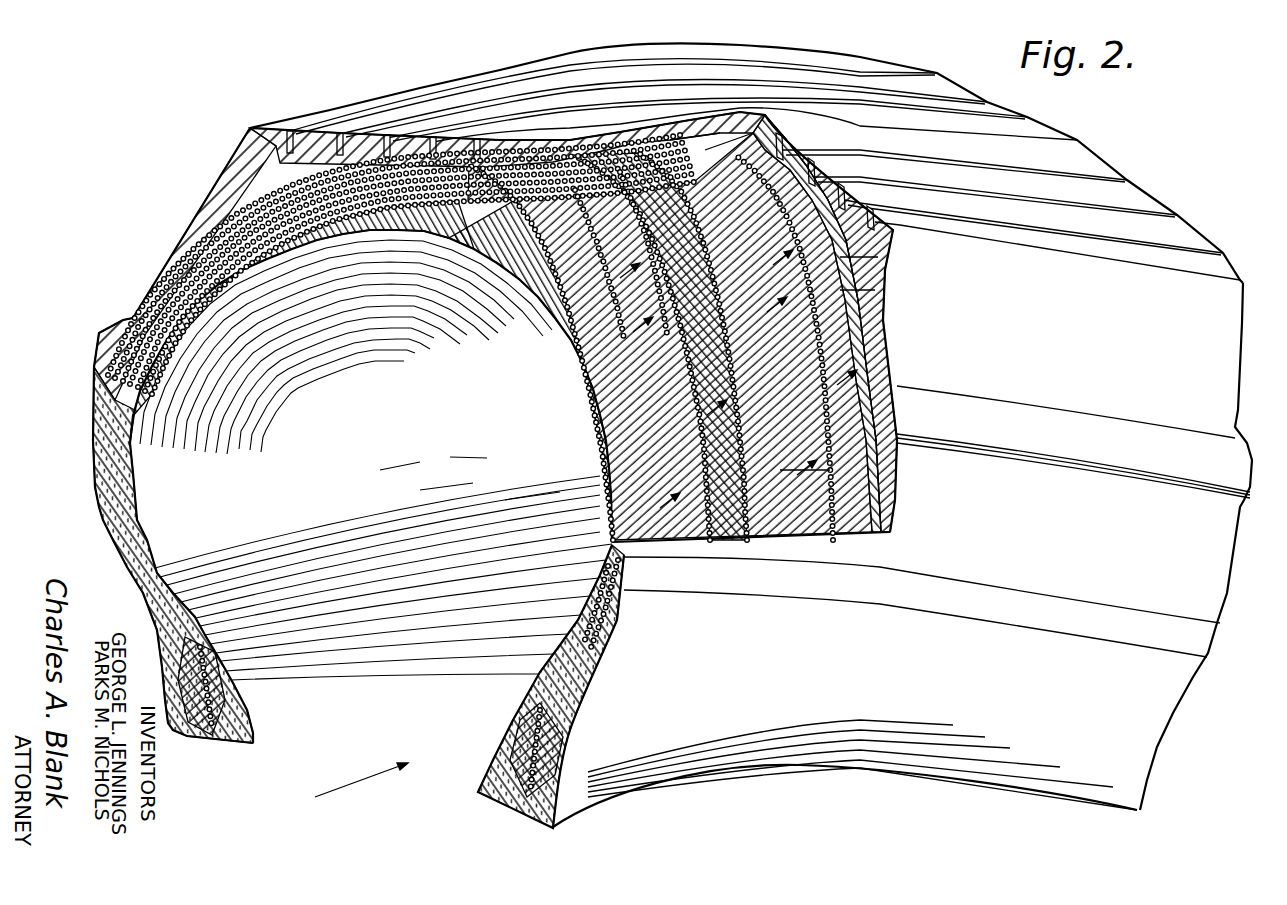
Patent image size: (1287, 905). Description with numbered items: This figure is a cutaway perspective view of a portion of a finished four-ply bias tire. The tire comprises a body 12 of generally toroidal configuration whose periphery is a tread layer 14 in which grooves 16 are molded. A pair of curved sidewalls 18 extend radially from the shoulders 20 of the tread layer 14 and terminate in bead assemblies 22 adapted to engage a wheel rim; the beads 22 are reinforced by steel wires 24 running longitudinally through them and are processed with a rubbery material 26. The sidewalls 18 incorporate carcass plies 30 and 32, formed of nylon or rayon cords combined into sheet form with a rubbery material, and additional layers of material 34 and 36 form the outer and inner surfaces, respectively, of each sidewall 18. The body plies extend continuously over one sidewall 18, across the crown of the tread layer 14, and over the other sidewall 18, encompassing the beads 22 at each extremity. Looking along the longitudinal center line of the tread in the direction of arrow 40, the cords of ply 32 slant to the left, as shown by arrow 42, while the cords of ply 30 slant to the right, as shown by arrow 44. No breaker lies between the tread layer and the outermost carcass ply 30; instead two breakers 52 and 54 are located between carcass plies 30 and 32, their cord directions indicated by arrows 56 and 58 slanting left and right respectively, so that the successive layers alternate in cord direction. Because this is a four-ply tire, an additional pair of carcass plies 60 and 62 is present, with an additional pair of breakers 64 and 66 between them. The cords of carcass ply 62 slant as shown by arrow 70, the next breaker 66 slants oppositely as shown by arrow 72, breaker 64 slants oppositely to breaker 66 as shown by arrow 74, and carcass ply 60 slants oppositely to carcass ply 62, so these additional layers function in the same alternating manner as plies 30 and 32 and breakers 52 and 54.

The body 12 is at (1240, 395).
The tread layer 14 is at (1082, 134).
The grooves 16 is at (1124, 182).
The sidewalls 18 is at (96, 527).
The shoulders 20 is at (255, 128).
The bead assemblies 22 is at (190, 733).
The steel wires 24 is at (217, 740).
The rubbery material 26 is at (206, 640).
The carcass ply 30 is at (723, 538).
The carcass ply 32 is at (630, 427).
The layer of material 34 is at (95, 445).
The layer of material 36 is at (132, 455).
The arrow 40 is at (357, 778).
The arrow 42 is at (660, 510).
The arrow 44 is at (710, 393).
The breaker 52 is at (557, 263).
The breaker 54 is at (530, 207).
The arrow 56 is at (580, 300).
The arrow 58 is at (587, 333).
The carcass ply 60 is at (862, 480).
The carcass ply 62 is at (783, 512).
The breaker 64 is at (793, 142).
The breaker 66 is at (735, 118).
The arrow 70 is at (795, 478).
The arrow 72 is at (875, 290).
The arrow 74 is at (878, 257).